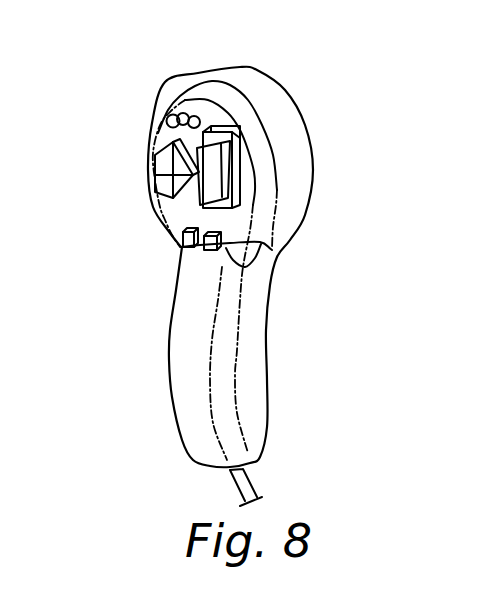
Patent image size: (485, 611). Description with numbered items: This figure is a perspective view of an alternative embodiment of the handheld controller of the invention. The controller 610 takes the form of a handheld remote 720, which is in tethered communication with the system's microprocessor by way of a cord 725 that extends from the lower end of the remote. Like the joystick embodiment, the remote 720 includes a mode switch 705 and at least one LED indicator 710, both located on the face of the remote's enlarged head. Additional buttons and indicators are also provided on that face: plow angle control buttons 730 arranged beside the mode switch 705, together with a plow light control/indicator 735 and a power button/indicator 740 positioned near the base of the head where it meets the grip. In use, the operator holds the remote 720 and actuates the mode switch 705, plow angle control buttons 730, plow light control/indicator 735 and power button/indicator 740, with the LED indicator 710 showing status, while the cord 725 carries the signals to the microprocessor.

The controller 610 is at (271, 267).
The mode switch 705 is at (220, 130).
The LED indicator 710 is at (184, 113).
The handheld remote 720 is at (283, 92).
The cord 725 is at (250, 478).
The plow angle control buttons 730 is at (157, 164).
The plow light control/indicator 735 is at (180, 247).
The power button/indicator 740 is at (272, 250).